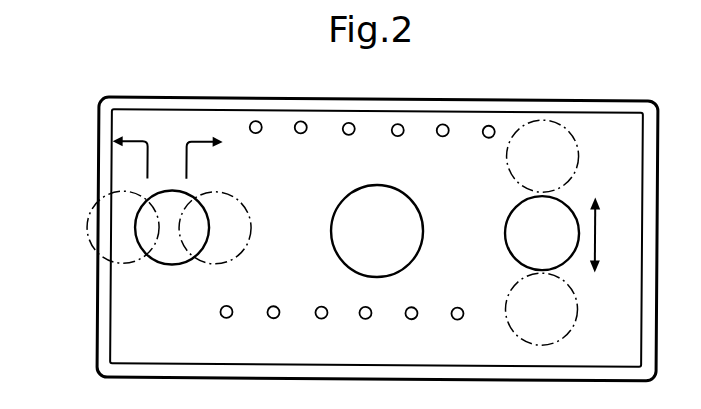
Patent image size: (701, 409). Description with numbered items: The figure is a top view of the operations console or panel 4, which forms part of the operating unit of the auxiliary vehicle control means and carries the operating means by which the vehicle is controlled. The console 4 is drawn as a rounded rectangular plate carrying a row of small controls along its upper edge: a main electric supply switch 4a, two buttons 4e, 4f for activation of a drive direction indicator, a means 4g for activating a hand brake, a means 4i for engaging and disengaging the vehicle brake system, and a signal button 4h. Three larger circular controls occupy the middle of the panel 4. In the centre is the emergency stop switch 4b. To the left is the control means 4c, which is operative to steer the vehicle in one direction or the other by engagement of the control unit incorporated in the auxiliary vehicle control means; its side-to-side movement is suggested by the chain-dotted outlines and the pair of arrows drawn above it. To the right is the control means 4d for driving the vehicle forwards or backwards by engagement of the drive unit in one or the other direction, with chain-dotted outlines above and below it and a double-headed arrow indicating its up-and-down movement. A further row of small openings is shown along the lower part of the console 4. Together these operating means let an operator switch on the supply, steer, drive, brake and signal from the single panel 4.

The operations console 4 is at (82, 134).
The main electric supply switch 4a is at (255, 121).
The emergency stop switch 4b is at (348, 247).
The control means for steering 4c is at (148, 232).
The control means for driving 4d is at (524, 244).
The button for drive direction indicator 4e is at (300, 121).
The button for drive direction indicator 4f is at (348, 122).
The means for activating a hand brake 4g is at (397, 123).
The signal button 4h is at (488, 124).
The means for engaging and disengaging the vehicle brake system 4i is at (442, 123).